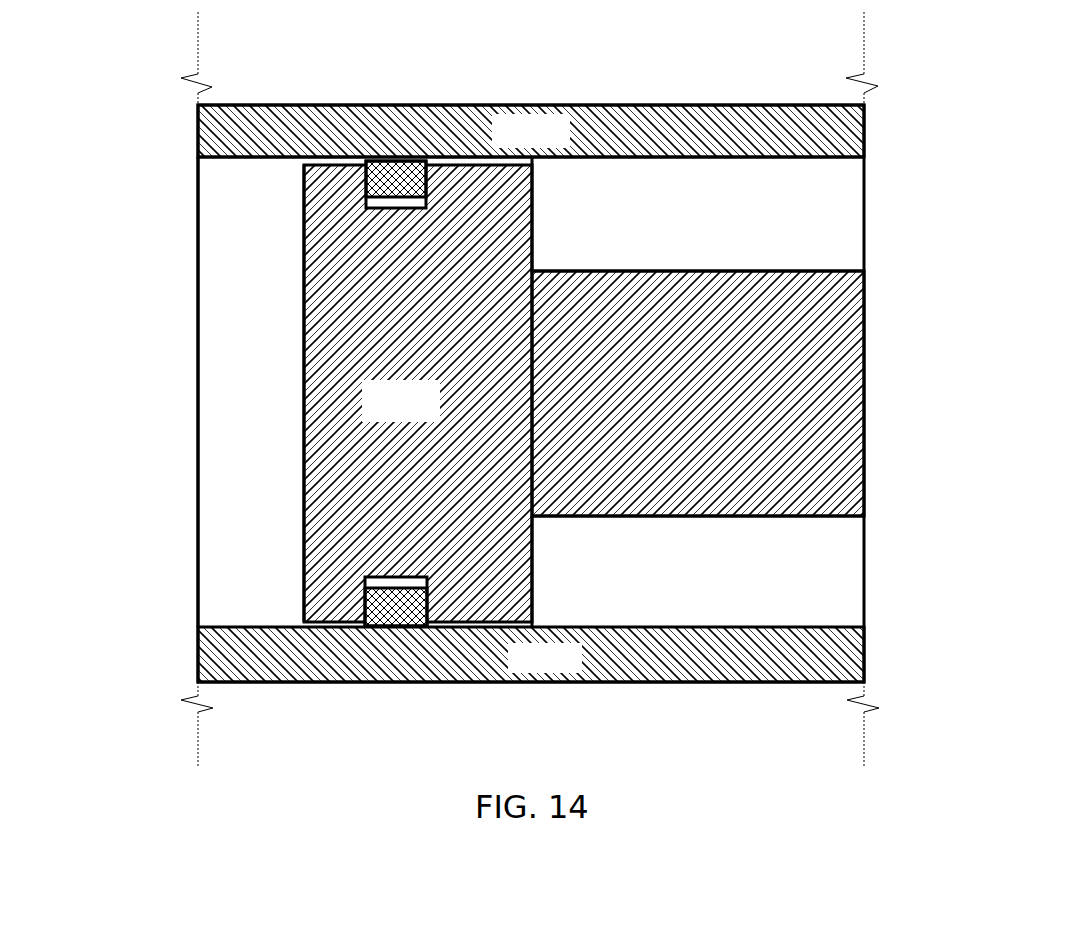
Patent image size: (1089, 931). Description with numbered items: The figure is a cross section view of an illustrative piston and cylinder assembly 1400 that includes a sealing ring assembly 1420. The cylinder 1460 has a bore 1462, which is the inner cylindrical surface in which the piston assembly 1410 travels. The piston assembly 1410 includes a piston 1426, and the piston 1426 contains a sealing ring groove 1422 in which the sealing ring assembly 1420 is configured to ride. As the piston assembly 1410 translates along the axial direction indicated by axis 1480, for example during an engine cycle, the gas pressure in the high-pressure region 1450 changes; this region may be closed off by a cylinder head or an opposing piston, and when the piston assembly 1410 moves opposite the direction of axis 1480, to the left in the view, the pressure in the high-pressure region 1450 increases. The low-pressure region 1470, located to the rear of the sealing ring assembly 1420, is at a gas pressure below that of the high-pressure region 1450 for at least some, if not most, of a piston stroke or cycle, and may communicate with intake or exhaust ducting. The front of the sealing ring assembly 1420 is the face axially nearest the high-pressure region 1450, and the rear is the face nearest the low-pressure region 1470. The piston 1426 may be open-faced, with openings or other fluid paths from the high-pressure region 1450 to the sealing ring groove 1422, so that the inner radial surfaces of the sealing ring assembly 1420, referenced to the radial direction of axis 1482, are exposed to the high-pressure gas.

The piston and cylinder assembly 1400 is at (815, 53).
The piston assembly 1410 is at (428, 411).
The sealing ring assembly 1420 is at (304, 186).
The sealing ring groove 1422 is at (354, 576).
The piston 1426 is at (303, 264).
The high-pressure region 1450 is at (265, 340).
The cylinder 1460 is at (557, 140).
The bore 1462 is at (826, 160).
The low-pressure region 1470 is at (728, 218).
The axis 1480 is at (913, 397).
The axis 1482 is at (913, 397).